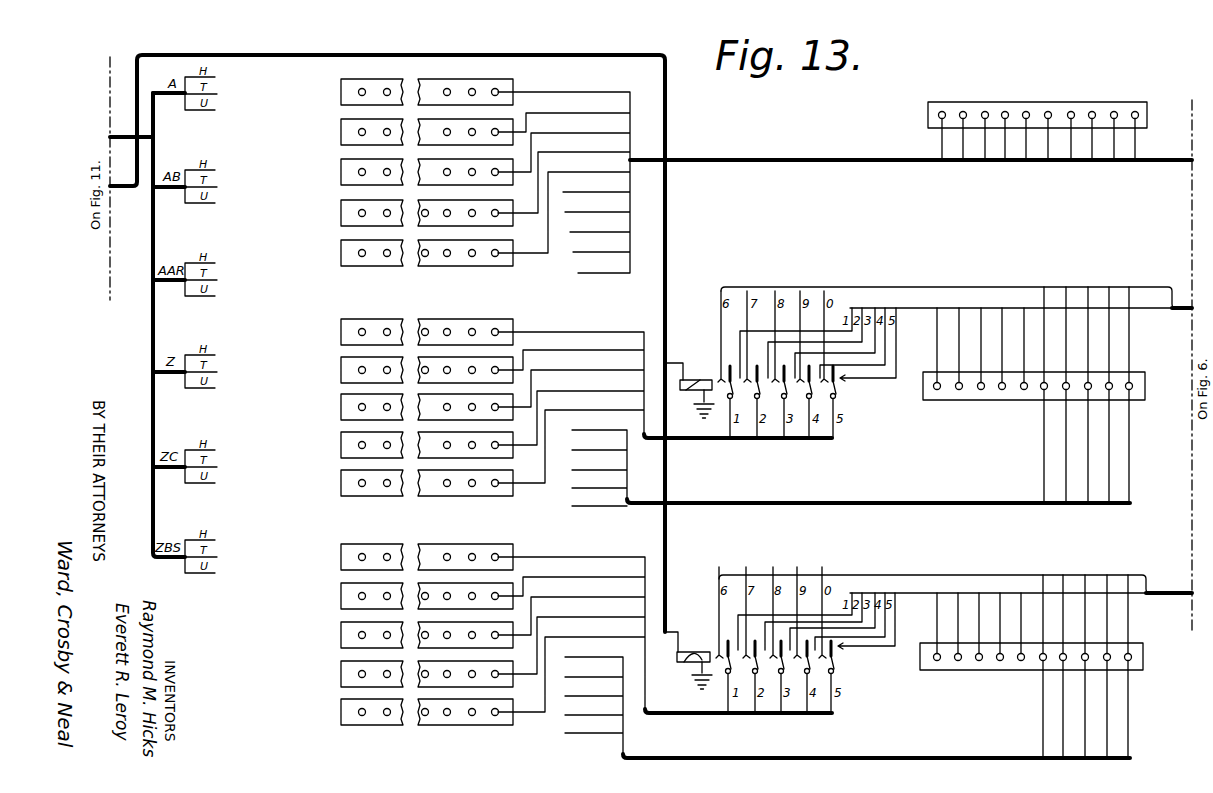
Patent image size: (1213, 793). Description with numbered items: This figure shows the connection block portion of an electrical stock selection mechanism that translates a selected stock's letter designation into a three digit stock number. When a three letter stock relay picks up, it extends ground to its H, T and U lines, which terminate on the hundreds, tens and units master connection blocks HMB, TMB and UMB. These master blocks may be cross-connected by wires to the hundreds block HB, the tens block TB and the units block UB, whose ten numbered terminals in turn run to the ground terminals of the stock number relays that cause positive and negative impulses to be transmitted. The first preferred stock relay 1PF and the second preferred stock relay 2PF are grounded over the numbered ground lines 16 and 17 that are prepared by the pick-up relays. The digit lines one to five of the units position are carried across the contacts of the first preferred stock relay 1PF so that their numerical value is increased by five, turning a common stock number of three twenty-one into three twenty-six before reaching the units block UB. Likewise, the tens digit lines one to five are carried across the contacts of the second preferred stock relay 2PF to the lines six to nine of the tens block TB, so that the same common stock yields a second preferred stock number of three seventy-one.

The ground line 16 is at (663, 625).
The ground line 17 is at (668, 363).
The first preferred stock relay 1PF is at (695, 660).
The second preferred stock relay 2PF is at (699, 388).
The hundreds block HB is at (1037, 121).
The tens block TB is at (1034, 395).
The units block UB is at (1031, 666).
The hundreds master connection block HMB is at (474, 167).
The tens master connection block TMB is at (481, 403).
The units master connection block UMB is at (481, 640).